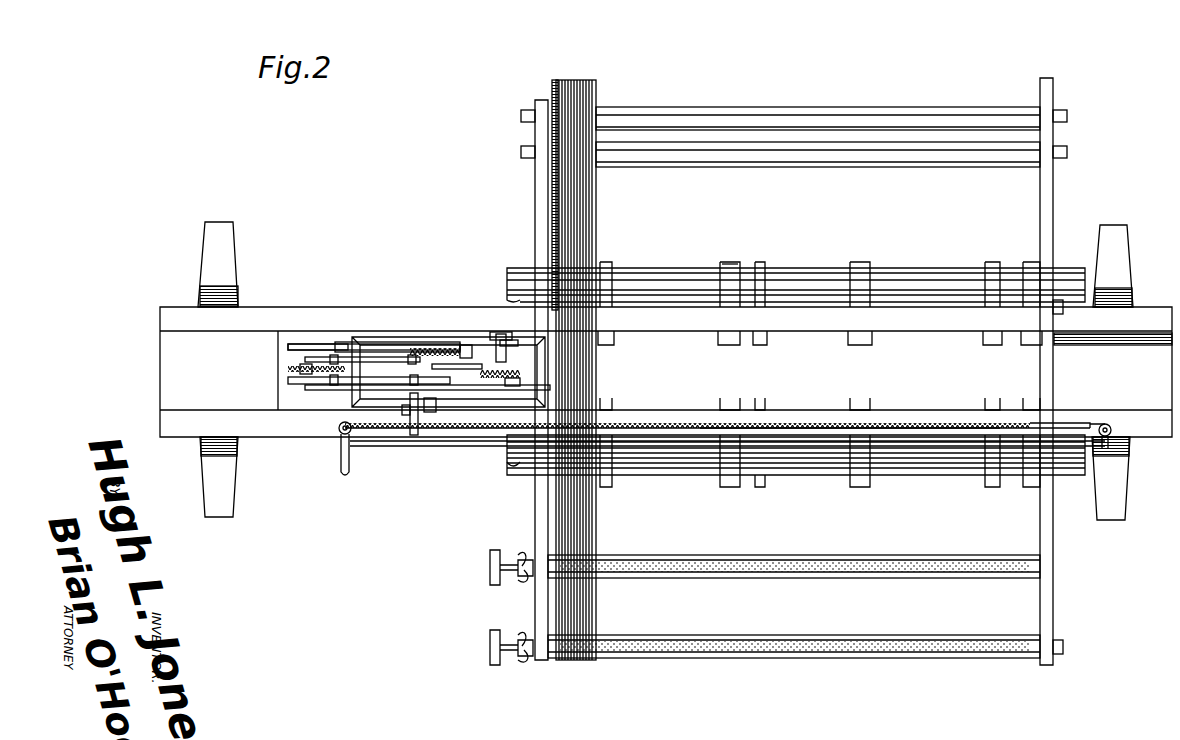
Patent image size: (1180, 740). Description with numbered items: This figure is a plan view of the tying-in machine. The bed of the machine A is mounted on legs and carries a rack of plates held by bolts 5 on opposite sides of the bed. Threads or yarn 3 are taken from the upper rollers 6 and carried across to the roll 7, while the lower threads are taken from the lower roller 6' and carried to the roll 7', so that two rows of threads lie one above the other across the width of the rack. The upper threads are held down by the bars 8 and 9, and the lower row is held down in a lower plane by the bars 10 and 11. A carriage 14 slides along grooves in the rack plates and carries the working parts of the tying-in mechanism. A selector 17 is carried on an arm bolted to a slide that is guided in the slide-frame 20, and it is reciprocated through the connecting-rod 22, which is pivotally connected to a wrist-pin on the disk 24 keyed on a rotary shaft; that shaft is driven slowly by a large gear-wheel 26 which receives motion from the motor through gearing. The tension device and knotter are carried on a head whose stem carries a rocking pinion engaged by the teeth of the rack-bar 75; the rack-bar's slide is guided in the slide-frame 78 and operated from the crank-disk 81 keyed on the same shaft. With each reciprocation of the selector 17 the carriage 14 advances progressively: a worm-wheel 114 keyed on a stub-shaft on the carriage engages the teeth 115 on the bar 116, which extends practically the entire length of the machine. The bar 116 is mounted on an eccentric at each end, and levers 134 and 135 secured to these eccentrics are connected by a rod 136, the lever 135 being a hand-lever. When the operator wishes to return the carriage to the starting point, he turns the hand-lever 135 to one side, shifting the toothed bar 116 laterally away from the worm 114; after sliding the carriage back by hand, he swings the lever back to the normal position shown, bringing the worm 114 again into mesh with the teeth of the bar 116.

The roll 7 is at (671, 430).
The upper rollers 6 is at (818, 109).
The lower roller 6' is at (818, 168).
The threads 3 is at (590, 234).
The bolts 5 is at (724, 264).
The bar 9 is at (758, 295).
The bar 11 is at (806, 280).
The bed of the machine A is at (160, 356).
The rack-bar 75 is at (498, 334).
The bar 8 is at (320, 343).
The slide-frame 78 is at (437, 350).
The crank-disk 81 is at (292, 347).
The gear-wheel 26 is at (288, 372).
The disk 24 is at (292, 383).
The carriage 14 is at (457, 368).
The selector 17 is at (516, 388).
The connecting-rod 22 is at (352, 399).
The hand-lever 135 is at (341, 460).
The worm-wheel 114 is at (410, 420).
The slide-frame 20 is at (432, 412).
The rod 136 is at (494, 447).
The teeth 115 is at (652, 424).
The bar 116 is at (910, 424).
The lever 134 is at (1102, 424).
The bar 10 is at (646, 455).
The roll 7' is at (794, 557).